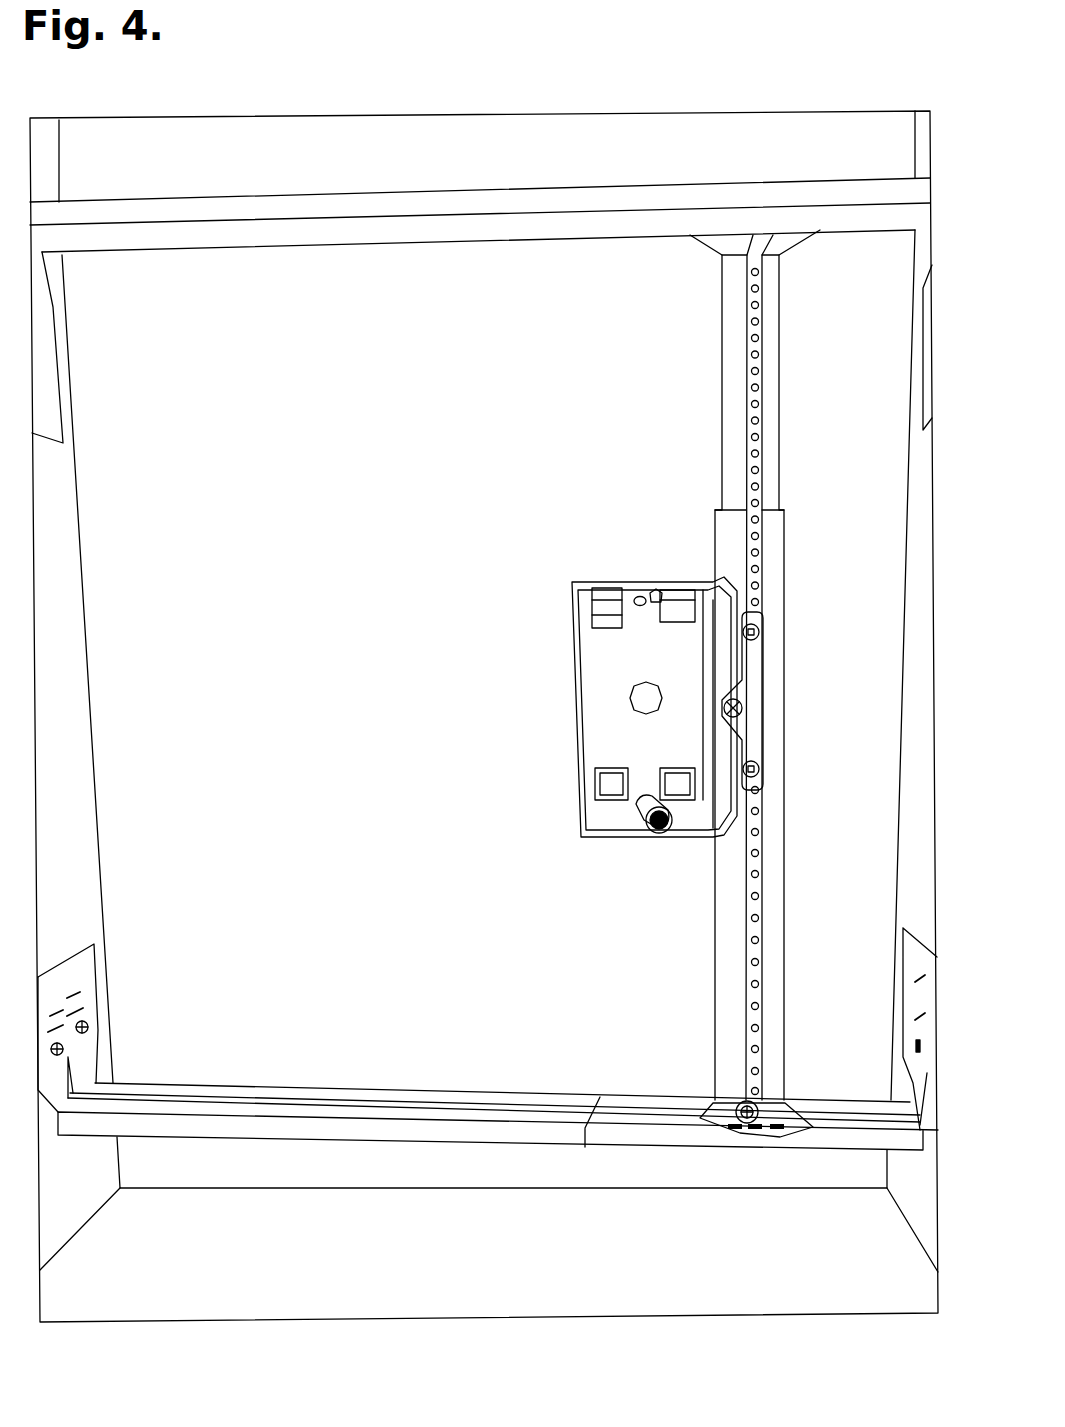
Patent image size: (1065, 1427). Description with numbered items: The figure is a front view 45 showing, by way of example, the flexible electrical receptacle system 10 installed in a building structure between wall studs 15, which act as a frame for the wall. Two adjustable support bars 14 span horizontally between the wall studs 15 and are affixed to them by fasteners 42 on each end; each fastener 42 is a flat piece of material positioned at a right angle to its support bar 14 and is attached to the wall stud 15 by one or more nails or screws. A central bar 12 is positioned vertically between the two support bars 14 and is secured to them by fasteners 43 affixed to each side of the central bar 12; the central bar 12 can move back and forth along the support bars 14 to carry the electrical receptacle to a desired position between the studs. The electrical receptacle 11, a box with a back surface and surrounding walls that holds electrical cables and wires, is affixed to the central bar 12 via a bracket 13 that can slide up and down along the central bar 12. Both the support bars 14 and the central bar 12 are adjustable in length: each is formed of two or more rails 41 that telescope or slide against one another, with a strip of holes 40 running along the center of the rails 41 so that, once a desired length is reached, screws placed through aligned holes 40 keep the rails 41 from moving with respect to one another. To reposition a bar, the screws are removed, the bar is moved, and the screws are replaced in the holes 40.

The flexible electrical receptacle system 10 is at (446, 86).
The electrical receptacle 11 is at (575, 727).
The central bar 12 is at (785, 1003).
The bracket 13 is at (762, 700).
The support bars 14 is at (510, 190).
The wall studs 15 is at (95, 768).
The holes 40 is at (745, 912).
The rails 41 is at (790, 488).
The fasteners 42 is at (95, 958).
The fasteners 43 is at (775, 1136).
The front view 45 is at (484, 688).